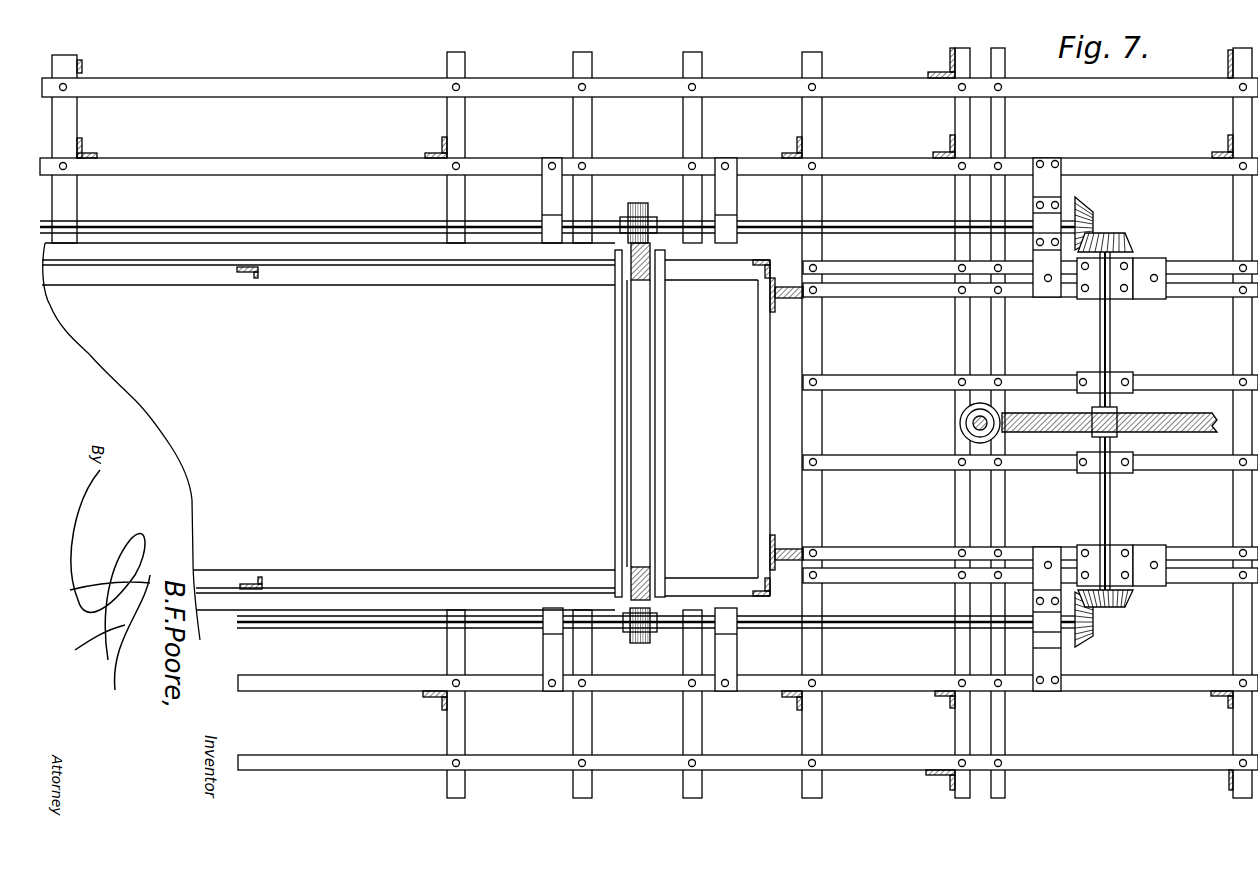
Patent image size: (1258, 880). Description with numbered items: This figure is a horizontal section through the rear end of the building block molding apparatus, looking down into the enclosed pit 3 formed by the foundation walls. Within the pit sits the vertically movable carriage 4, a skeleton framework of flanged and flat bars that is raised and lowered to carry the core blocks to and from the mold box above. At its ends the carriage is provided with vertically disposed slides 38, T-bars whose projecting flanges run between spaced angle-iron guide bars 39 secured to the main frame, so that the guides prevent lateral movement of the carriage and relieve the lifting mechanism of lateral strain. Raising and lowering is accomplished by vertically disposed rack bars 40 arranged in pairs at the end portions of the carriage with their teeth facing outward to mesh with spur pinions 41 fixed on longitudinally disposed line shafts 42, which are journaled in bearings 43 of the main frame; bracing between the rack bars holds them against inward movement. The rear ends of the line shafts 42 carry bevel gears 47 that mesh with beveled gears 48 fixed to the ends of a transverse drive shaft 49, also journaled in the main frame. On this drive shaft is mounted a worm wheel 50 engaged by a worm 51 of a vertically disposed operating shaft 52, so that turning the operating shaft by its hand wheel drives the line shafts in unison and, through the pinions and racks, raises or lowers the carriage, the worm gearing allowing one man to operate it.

The pit 3 is at (406, 428).
The vertically movable carriage 4 is at (450, 288).
The slides 38 is at (772, 312).
The guide bars 39 is at (786, 300).
The rack bars 40 is at (632, 250).
The pinions 41 is at (638, 197).
The line shafts 42 is at (889, 220).
The bearings 43 is at (738, 660).
The bevel gears 47 is at (1092, 212).
The beveled gears 48 is at (1126, 246).
The transverse drive shaft 49 is at (1111, 350).
The worm wheel 50 is at (1176, 412).
The worm 51 is at (959, 423).
The operating shaft 52 is at (986, 413).